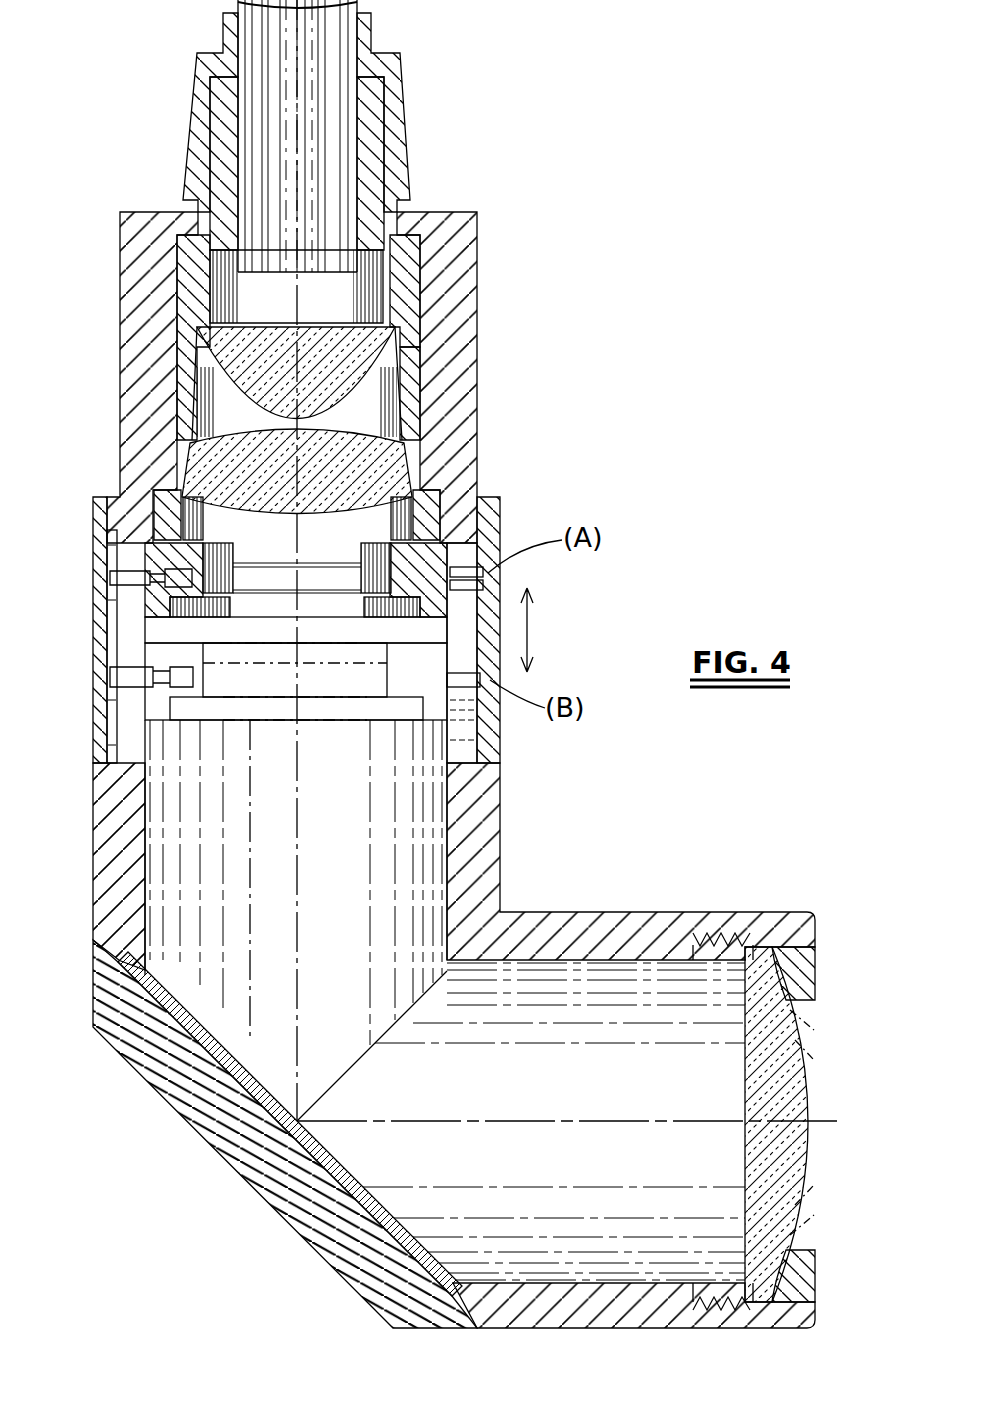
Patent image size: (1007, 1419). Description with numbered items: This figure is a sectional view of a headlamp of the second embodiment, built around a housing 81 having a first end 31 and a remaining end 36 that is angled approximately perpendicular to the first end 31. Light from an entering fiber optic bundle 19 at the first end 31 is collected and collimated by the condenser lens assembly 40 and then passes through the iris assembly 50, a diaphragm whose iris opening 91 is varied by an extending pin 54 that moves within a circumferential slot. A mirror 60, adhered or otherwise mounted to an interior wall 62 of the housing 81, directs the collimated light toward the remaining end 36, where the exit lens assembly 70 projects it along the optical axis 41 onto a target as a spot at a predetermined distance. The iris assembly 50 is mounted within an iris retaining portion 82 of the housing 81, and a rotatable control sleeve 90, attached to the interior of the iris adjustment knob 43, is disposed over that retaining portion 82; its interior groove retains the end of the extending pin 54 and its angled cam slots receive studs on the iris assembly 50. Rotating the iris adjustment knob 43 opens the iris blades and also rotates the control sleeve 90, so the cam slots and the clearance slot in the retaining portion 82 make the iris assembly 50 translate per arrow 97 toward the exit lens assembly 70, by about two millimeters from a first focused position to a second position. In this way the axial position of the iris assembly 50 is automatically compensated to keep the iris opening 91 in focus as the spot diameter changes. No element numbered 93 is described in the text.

The fiber optic bundle 19 is at (333, 110).
The first end 31 is at (367, 40).
The control sleeve 90 is at (174, 97).
The housing 81 is at (478, 240).
The condenser lens assembly 40 is at (430, 380).
The iris opening 91 is at (313, 563).
The iris assembly 50 is at (158, 550).
The iris adjustment knob 43 is at (517, 486).
The iris retaining portion 82 is at (460, 618).
The arrow 97 is at (530, 667).
The extending pin 54 is at (108, 570).
The carrier plate 93 is at (313, 667).
The optical axis 41 is at (828, 1141).
The exit lens assembly 70 is at (758, 955).
The remaining end 36 is at (828, 1029).
The interior wall 62 is at (257, 1190).
The mirror 60 is at (247, 1090).